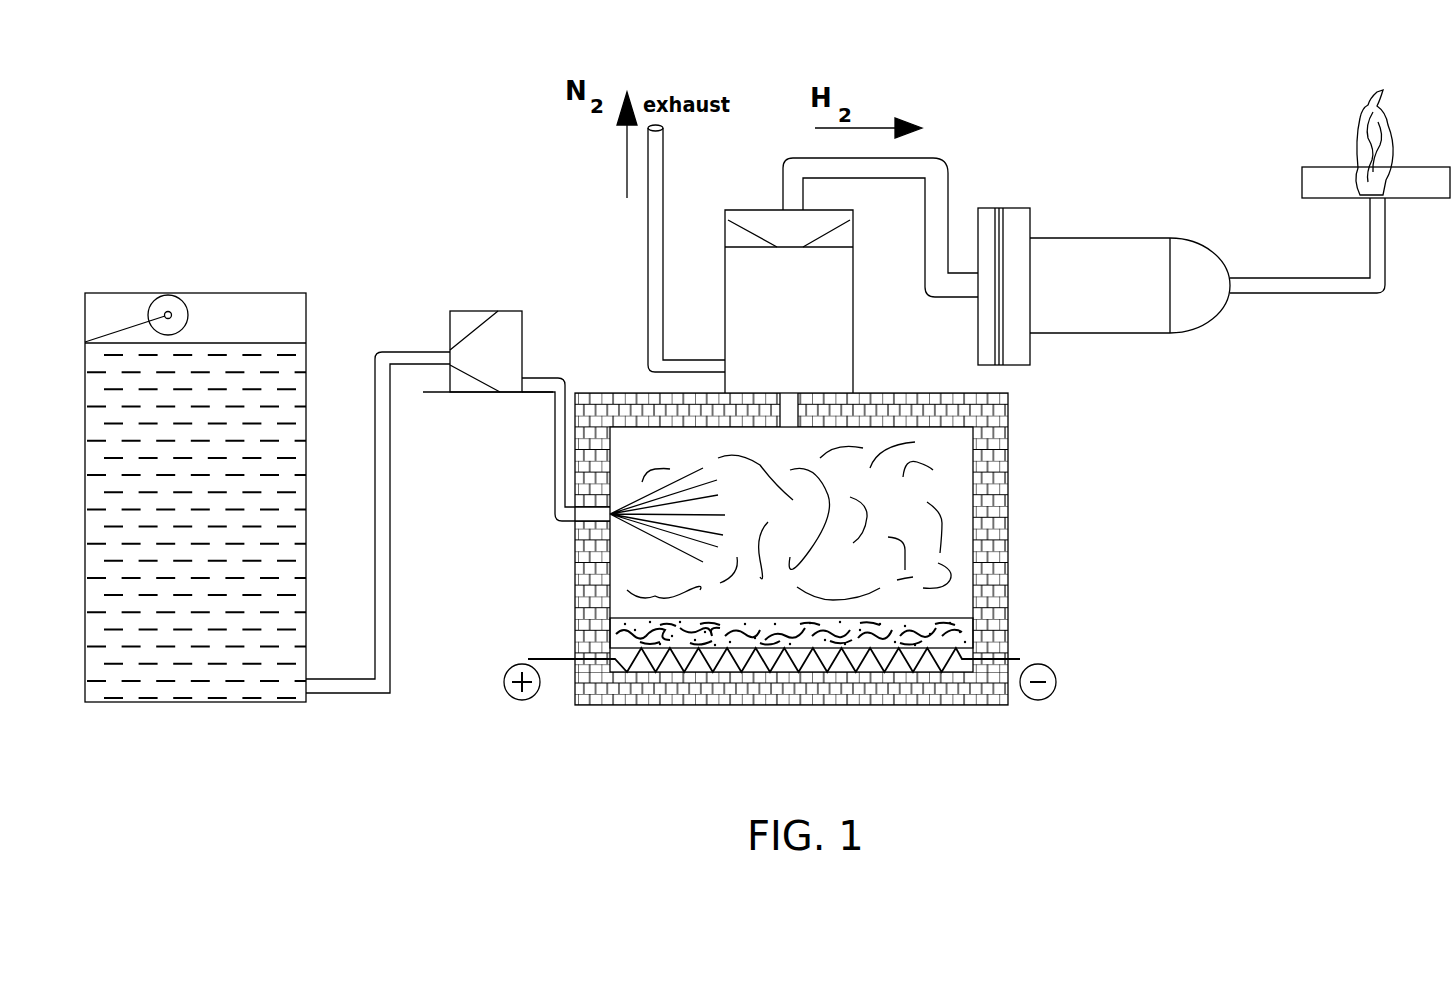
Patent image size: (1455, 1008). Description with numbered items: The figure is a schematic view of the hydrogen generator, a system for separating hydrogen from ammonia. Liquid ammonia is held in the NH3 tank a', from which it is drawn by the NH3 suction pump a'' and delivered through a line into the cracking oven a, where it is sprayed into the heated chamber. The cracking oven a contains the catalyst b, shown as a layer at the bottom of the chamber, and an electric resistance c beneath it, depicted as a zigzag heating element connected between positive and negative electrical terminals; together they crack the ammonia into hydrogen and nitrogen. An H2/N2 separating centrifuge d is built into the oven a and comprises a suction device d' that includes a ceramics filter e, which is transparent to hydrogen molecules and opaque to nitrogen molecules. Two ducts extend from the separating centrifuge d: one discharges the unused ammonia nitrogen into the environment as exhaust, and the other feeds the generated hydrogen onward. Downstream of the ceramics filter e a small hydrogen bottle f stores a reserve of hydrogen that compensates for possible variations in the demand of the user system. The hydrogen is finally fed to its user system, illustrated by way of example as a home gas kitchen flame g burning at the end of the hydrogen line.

The cracking oven a is at (840, 549).
The NH3 tank a' is at (236, 480).
The NH3 suction pump a'' is at (509, 341).
The catalyst b is at (967, 628).
The electric resistance c is at (905, 663).
The H2/N2 separating centrifuge d is at (822, 301).
The suction device d' is at (784, 200).
The ceramics filter e is at (1003, 222).
The small hydrogen bottle f is at (1093, 250).
The home gas kitchen flame g is at (1410, 195).